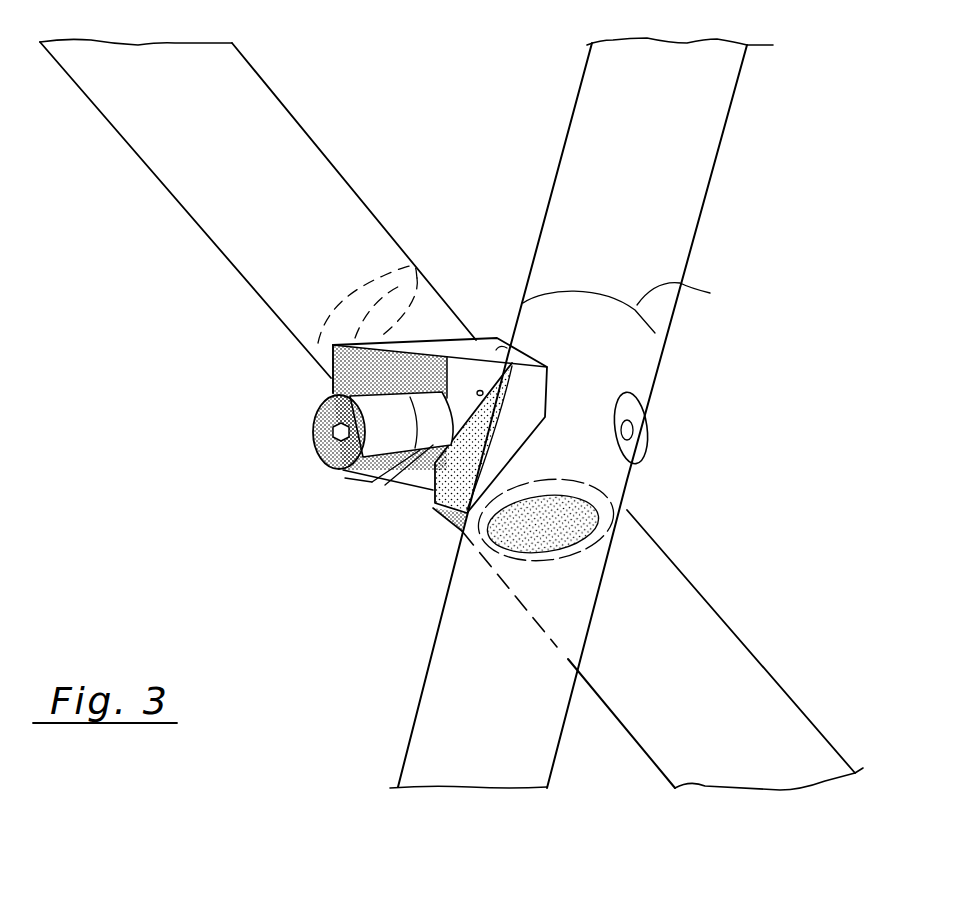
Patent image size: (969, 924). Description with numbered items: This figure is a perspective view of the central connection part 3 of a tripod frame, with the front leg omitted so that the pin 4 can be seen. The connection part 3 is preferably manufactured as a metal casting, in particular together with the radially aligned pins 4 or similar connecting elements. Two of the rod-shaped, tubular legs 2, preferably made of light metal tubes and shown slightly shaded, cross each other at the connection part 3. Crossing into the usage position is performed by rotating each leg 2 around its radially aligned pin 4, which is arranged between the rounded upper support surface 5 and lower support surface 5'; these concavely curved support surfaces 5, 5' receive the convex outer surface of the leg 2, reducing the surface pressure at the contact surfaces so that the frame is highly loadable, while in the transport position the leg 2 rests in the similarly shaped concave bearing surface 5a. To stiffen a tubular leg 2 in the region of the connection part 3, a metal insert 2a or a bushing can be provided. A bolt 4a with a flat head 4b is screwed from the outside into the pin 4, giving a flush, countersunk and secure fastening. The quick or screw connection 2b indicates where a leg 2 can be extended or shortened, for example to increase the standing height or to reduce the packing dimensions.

The leg 2 is at (322, 142).
The metal insert 2a is at (635, 362).
The quick or screw connection 2b is at (683, 287).
The connection part 3 is at (462, 350).
The pin 4 is at (380, 483).
The bolt 4a is at (644, 432).
The flat head 4b is at (312, 418).
The upper support surface 5 is at (498, 278).
The concave bearing surface 5a is at (327, 375).
The lower support surface 5' is at (481, 494).